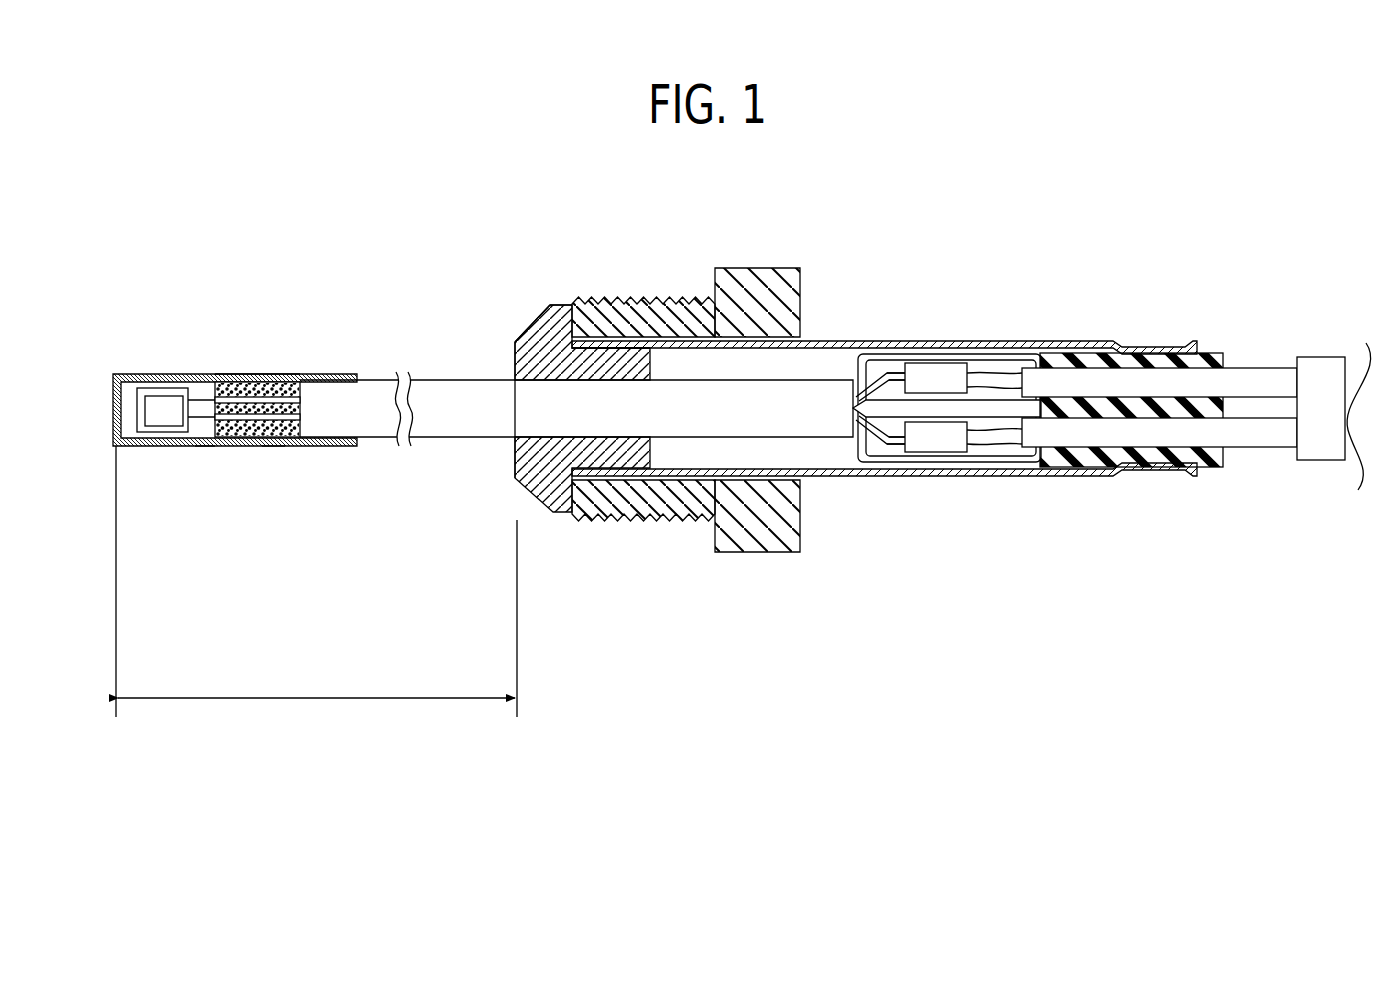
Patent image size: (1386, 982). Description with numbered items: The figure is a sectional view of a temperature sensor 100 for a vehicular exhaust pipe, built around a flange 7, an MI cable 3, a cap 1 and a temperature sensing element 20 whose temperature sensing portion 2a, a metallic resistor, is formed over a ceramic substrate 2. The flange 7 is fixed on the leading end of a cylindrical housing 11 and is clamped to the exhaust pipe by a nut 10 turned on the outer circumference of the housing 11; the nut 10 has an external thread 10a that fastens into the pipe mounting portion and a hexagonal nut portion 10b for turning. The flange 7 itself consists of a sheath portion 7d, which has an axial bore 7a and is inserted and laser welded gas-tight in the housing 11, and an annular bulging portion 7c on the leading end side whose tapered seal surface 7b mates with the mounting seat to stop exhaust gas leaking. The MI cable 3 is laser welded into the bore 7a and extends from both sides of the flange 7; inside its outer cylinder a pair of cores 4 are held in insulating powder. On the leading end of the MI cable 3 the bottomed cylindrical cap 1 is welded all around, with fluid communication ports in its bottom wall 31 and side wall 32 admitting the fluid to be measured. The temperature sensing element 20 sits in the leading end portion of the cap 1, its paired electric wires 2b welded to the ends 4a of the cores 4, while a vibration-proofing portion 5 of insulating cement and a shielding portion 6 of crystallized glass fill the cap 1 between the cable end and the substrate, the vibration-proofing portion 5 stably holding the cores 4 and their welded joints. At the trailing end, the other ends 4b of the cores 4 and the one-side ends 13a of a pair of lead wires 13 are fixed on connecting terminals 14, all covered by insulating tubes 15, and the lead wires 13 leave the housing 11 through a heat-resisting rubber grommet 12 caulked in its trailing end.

The temperature sensor 100 is at (979, 226).
The cap 1 is at (243, 381).
The ceramic substrate 2 is at (175, 443).
The temperature sensing portion 2a is at (155, 421).
The electric wires 2b is at (227, 387).
The MI cable 3 is at (430, 418).
The cores 4 is at (862, 378).
The ends of the cores 4a is at (290, 390).
The other ends of the cores 4b is at (893, 376).
The vibration-proofing portion 5 is at (252, 374).
The shielding portion 6 is at (207, 443).
The flange 7 is at (547, 484).
The bore 7a is at (513, 410).
The seal surface 7b is at (533, 322).
The bulging portion 7c is at (555, 330).
The sheath portion 7d is at (613, 355).
The nut 10 is at (660, 503).
The external thread 10a is at (598, 525).
The hexagonal nut portion 10b is at (740, 542).
The housing 11 is at (827, 341).
The grommet 12 is at (1217, 468).
The lead wires 13 is at (1257, 370).
The one-side ends of the lead wires 13a is at (987, 372).
The connecting terminals 14 is at (945, 368).
The insulating tubes 15 is at (1018, 358).
The temperature sensing element 20 is at (151, 394).
The bottom wall 31 is at (117, 408).
The side wall 32 is at (273, 443).